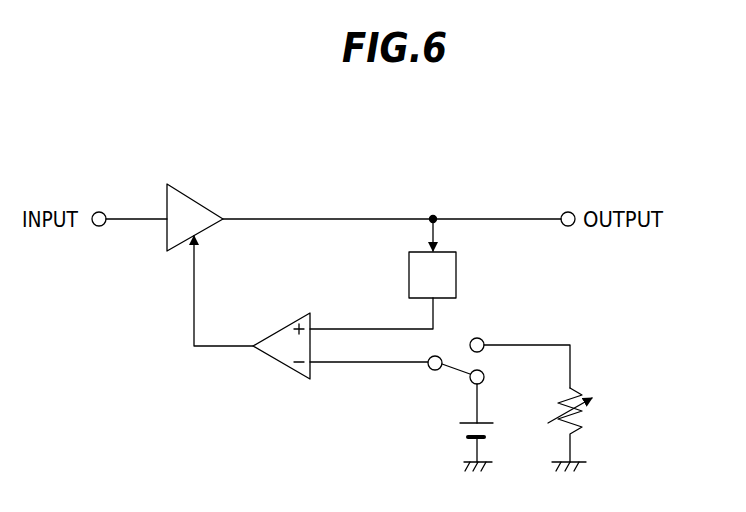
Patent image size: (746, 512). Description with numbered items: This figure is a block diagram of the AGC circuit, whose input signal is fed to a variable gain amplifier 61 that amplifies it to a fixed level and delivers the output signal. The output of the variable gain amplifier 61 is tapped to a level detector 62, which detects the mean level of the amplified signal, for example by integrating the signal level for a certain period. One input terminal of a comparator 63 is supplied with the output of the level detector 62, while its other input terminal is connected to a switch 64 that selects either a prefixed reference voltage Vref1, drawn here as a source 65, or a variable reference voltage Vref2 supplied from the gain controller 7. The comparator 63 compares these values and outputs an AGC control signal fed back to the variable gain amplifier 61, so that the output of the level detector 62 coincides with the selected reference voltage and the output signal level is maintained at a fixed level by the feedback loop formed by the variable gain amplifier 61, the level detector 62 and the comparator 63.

The variable gain amplifier 61 is at (208, 205).
The level detector 62 is at (456, 262).
The comparator 63 is at (280, 330).
The switch 64 is at (447, 371).
The reference voltage source Vref1 (battery) 65 is at (458, 431).
The gain controller 7 is at (576, 393).